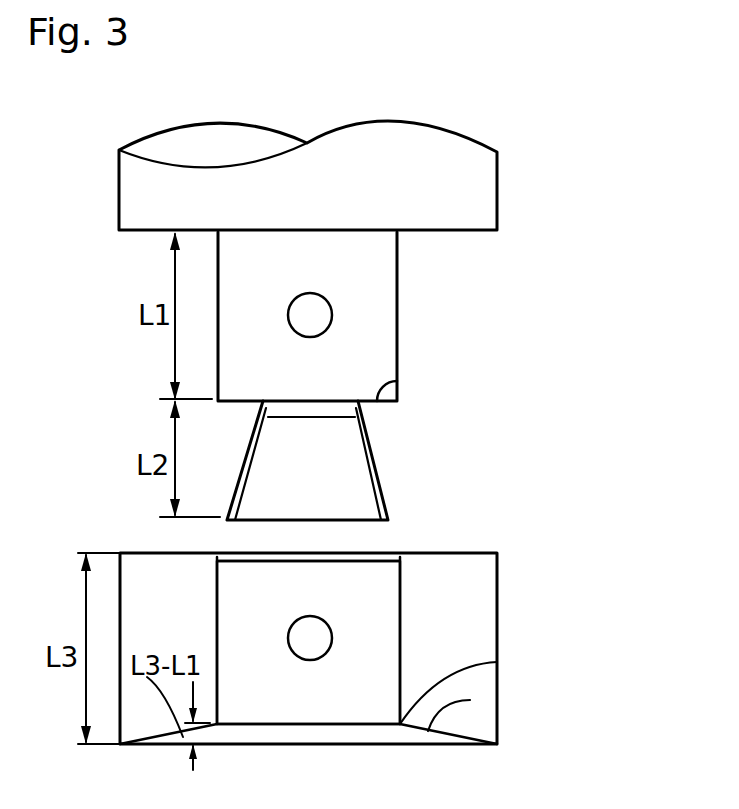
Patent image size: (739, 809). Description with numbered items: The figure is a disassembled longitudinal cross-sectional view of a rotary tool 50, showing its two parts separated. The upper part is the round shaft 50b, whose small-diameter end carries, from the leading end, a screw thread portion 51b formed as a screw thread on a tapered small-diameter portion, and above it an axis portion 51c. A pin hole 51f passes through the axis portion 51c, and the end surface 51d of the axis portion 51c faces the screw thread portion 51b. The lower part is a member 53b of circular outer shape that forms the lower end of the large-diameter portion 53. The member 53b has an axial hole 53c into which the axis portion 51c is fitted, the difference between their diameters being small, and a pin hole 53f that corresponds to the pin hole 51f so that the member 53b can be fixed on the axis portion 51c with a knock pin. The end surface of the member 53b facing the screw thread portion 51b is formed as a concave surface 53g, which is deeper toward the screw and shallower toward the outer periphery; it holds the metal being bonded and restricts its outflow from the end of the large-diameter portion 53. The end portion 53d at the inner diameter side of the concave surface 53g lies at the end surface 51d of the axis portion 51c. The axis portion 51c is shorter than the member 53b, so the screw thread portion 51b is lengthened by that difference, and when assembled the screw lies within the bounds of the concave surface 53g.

The rotary tool 50 is at (367, 171).
The round shaft 50b is at (485, 213).
The axis portion 51c is at (380, 328).
The pin hole 51f is at (328, 300).
The end surface 51d is at (397, 380).
The screw thread portion 51b is at (381, 480).
The large-diameter portion 53 is at (379, 648).
The member 53b is at (480, 617).
The axial hole 53c is at (400, 707).
The pin hole 53f is at (322, 617).
The end portion 53d is at (497, 662).
The concave surface 53g is at (470, 700).